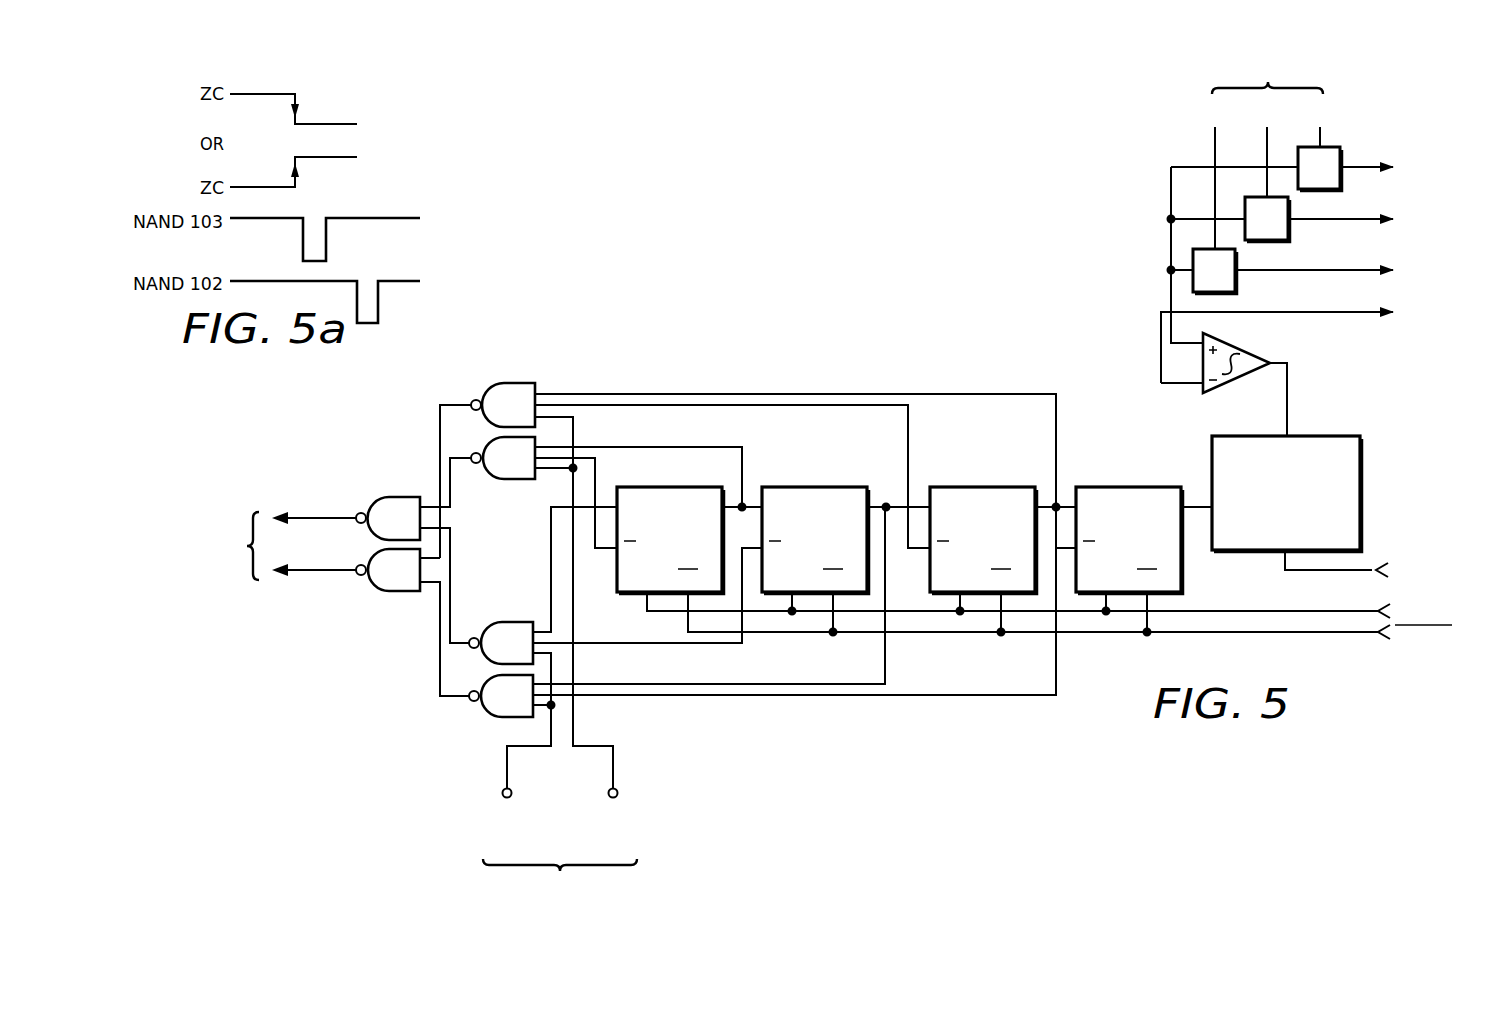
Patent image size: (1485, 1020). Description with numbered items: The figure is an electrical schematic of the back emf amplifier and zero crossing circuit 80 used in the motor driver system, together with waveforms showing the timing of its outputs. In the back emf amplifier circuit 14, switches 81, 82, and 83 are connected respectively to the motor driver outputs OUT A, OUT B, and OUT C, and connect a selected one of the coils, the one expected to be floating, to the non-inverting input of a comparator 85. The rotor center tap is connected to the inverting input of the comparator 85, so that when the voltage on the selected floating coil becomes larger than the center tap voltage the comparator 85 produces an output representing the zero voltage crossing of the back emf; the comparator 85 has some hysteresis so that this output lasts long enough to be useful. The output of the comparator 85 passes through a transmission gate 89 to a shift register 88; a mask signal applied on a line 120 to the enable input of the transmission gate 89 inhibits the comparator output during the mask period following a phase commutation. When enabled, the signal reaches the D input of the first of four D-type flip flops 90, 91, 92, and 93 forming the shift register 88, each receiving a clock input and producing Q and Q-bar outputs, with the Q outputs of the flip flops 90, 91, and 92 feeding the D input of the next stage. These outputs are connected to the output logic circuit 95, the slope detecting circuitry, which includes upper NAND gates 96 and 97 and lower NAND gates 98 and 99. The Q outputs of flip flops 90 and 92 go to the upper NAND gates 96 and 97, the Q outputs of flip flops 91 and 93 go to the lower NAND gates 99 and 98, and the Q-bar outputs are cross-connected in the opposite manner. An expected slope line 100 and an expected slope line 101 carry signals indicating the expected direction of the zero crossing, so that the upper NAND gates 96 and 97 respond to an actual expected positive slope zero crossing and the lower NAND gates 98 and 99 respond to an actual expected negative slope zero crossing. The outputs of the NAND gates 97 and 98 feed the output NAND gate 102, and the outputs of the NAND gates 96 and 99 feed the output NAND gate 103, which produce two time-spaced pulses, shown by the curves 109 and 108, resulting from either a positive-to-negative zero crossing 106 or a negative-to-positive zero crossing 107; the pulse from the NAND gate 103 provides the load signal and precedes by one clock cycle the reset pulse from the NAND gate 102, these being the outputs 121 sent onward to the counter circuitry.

In FIG. 5, the back emf amplifier circuit 14 is at (1142, 294).
In FIG. 5, the zero crossing circuit 80 is at (922, 200).
In FIG. 5, the switch 81 is at (1343, 178).
In FIG. 5, the switch 82 is at (1290, 229).
In FIG. 5, the switch 83 is at (1238, 280).
In FIG. 5, the comparator 85 is at (1255, 353).
In FIG. 5, the shift register 88 is at (1100, 432).
In FIG. 5, the transmission gate 89 is at (1318, 435).
In FIG. 5, the D-type flip flop 90 is at (1128, 486).
In FIG. 5, the D-type flip flop 91 is at (980, 486).
In FIG. 5, the D-type flip flop 92 is at (813, 486).
In FIG. 5, the D-type flip flop 93 is at (668, 486).
In FIG. 5, the output logic circuit 95 is at (522, 312).
In FIG. 5, the upper NAND gate 96 is at (512, 382).
In FIG. 5, the upper NAND gate 97 is at (512, 480).
In FIG. 5, the lower NAND gate 98 is at (512, 620).
In FIG. 5, the lower NAND gate 99 is at (490, 718).
In FIG. 5, the expected slope line 100 is at (618, 787).
In FIG. 5, the expected slope line 101 is at (503, 787).
In FIG. 5, the output NAND gate 102 is at (398, 495).
In FIG. 5, the output NAND gate 103 is at (398, 593).
In FIG. 5a, the positive-to-negative zero crossing 106 is at (325, 123).
In FIG. 5a, the negative-to-positive zero crossing 107 is at (327, 158).
In FIG. 5a, the curve 108 is at (397, 216).
In FIG. 5a, the curve 109 is at (398, 283).
In FIG. 5, the line 120 is at (1368, 566).
In FIG. 5, the reset/load outputs to FIG. 7 121 is at (320, 574).